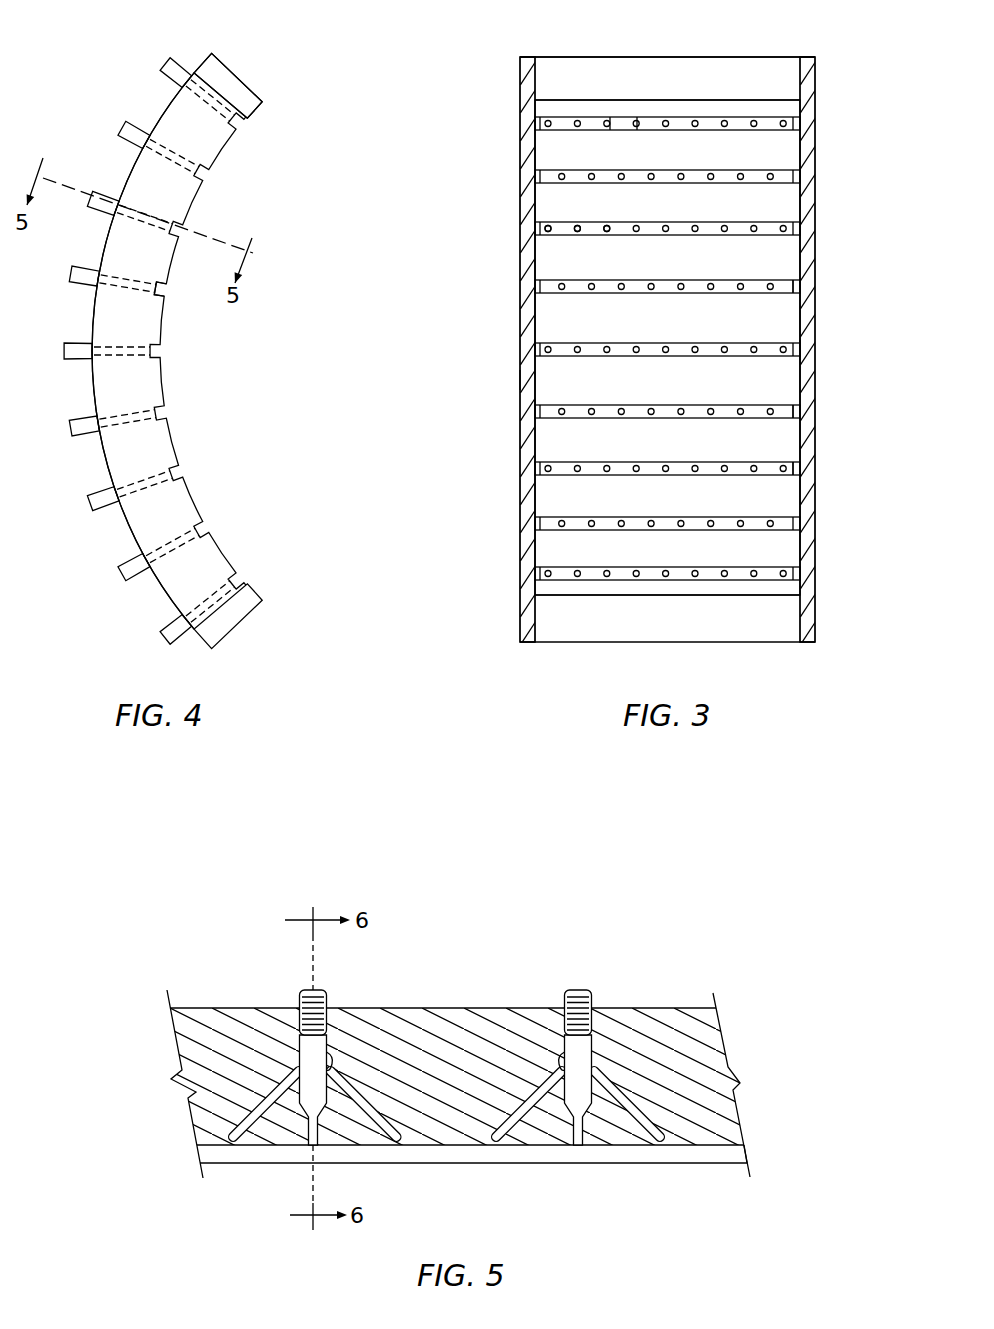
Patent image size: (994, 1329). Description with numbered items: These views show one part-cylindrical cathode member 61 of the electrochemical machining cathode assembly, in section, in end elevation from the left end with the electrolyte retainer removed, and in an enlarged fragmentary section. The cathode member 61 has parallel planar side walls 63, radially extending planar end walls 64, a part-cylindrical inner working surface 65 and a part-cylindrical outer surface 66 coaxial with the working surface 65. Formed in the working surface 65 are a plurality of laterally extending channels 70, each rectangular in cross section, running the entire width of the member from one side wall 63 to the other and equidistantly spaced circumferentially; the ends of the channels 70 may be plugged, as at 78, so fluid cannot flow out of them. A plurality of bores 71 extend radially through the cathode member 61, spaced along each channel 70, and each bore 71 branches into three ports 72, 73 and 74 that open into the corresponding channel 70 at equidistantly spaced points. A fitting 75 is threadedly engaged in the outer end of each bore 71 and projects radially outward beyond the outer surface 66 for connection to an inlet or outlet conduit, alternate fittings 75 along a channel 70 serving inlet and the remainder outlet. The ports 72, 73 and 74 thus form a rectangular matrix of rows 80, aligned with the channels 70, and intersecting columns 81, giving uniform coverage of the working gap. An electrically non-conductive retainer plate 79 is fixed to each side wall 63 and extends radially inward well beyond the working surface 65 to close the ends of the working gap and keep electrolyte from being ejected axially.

In FIG. 3, the cathode member 61 is at (600, 50).
In FIG. 4, the cathode member 61 is at (255, 83).
In FIG. 5, the cathode member 61 is at (432, 1020).
In FIG. 3, the side walls 63 is at (535, 150).
In FIG. 4, the side walls 63 is at (169, 198).
In FIG. 3, the end walls 64 is at (740, 56).
In FIG. 4, the end walls 64 is at (236, 60).
In FIG. 3, the working surface 65 is at (671, 506).
In FIG. 4, the working surface 65 is at (175, 444).
In FIG. 5, the working surface 65 is at (740, 1165).
In FIG. 4, the outer surface 66 is at (129, 178).
In FIG. 5, the outer surface 66 is at (684, 1008).
In FIG. 3, the channels 70 is at (800, 229).
In FIG. 4, the channels 70 is at (166, 291).
In FIG. 5, the channels 70 is at (430, 1150).
In FIG. 4, the bores 71 is at (100, 336).
In FIG. 5, the bores 71 is at (332, 1058).
In FIG. 3, the port 72 is at (545, 229).
In FIG. 5, the port 72 is at (236, 1142).
In FIG. 3, the port 73 is at (574, 232).
In FIG. 5, the port 73 is at (579, 1150).
In FIG. 3, the port 74 is at (604, 232).
In FIG. 5, the port 74 is at (666, 1138).
In FIG. 4, the fitting 75 is at (143, 128).
In FIG. 5, the fitting 75 is at (301, 990).
In FIG. 3, the plug 78 is at (795, 284).
In FIG. 3, the retainer plate 79 is at (812, 352).
In FIG. 3, the rows 80 is at (767, 457).
In FIG. 3, the columns 81 is at (640, 106).